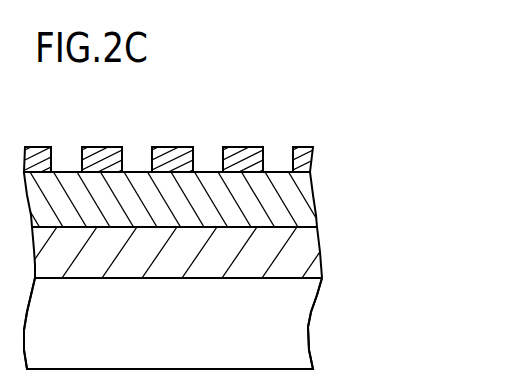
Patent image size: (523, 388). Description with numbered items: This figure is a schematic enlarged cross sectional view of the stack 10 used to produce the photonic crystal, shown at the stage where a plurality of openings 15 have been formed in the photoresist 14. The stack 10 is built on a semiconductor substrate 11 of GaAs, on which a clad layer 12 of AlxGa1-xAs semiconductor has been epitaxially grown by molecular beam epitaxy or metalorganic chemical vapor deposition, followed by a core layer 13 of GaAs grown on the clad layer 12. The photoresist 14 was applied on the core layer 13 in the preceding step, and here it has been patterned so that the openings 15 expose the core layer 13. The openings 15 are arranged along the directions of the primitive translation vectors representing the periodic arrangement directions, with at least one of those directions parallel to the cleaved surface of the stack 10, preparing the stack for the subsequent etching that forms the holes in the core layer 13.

The stack 10 is at (217, 270).
The semiconductor substrate 11 is at (202, 323).
The clad layer 12 is at (305, 237).
The core layer 13 is at (300, 205).
The photoresist 14 is at (303, 155).
The openings 15 is at (67, 157).